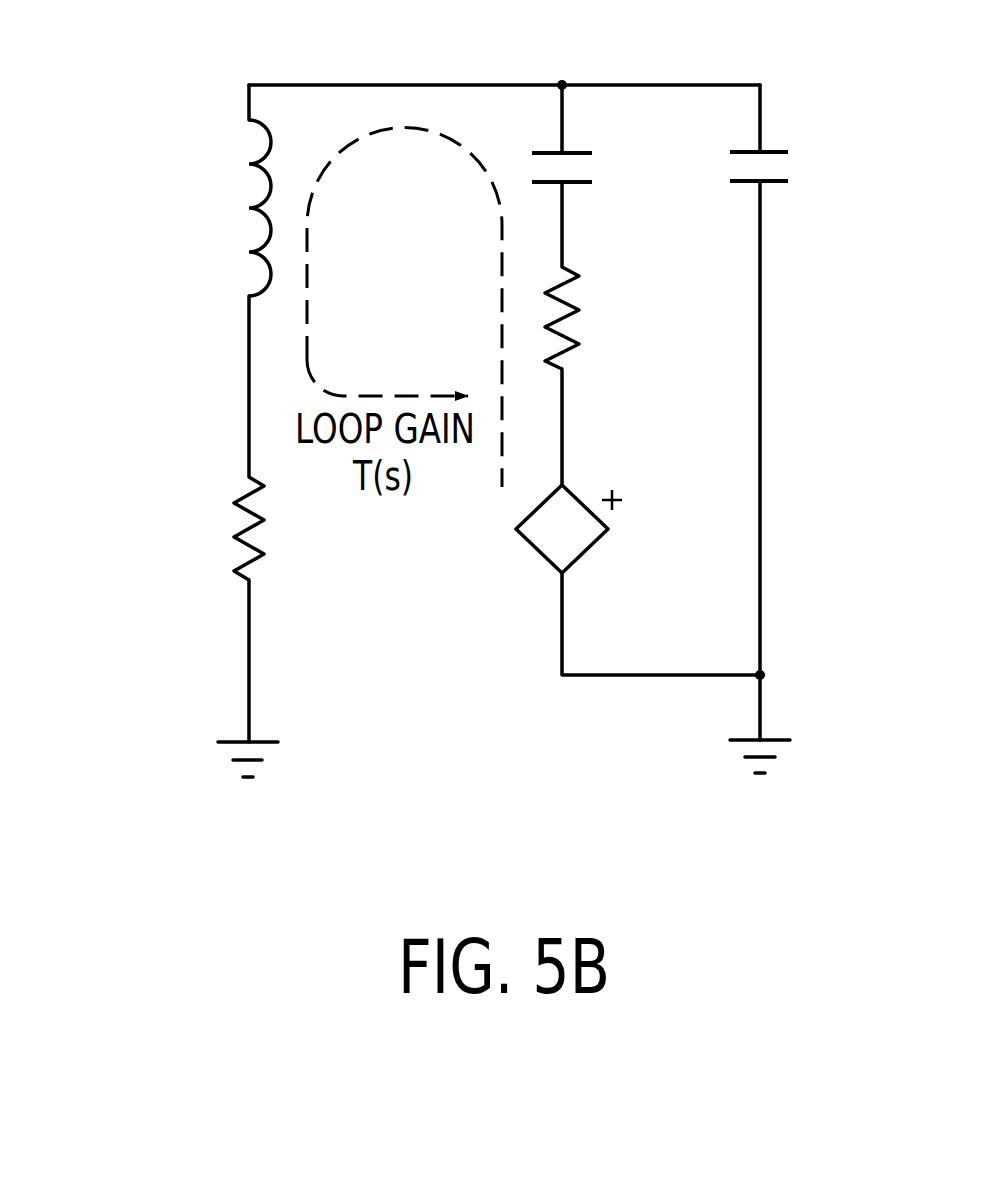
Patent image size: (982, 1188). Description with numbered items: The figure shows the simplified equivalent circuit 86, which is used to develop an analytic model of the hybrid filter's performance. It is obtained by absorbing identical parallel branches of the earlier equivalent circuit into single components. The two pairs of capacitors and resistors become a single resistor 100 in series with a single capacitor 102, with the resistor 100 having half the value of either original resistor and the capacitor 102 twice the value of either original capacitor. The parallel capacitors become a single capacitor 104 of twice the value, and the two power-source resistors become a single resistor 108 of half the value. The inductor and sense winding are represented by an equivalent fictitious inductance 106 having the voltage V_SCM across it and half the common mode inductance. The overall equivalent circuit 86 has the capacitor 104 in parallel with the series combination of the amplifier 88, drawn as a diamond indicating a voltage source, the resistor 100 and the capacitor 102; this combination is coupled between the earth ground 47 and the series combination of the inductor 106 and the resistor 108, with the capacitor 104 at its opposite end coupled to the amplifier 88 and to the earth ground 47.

The equivalent circuit 86 is at (128, 182).
The equivalent fictitious inductance 106 is at (240, 262).
The resistor 108 is at (210, 552).
The capacitor 102 is at (604, 178).
The resistor 100 is at (585, 329).
The capacitor 104 is at (785, 196).
The amplifier 88 is at (532, 565).
The earth ground 47 is at (278, 769).